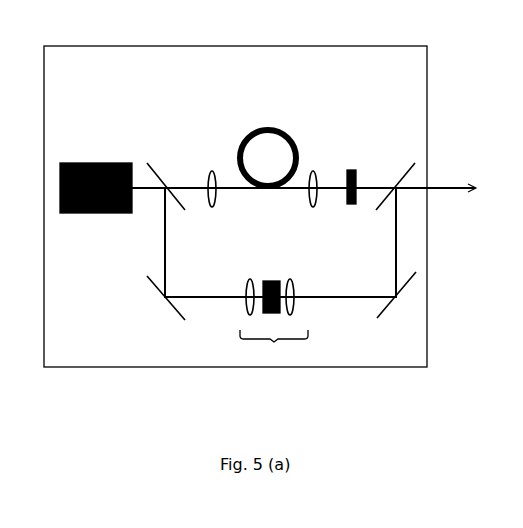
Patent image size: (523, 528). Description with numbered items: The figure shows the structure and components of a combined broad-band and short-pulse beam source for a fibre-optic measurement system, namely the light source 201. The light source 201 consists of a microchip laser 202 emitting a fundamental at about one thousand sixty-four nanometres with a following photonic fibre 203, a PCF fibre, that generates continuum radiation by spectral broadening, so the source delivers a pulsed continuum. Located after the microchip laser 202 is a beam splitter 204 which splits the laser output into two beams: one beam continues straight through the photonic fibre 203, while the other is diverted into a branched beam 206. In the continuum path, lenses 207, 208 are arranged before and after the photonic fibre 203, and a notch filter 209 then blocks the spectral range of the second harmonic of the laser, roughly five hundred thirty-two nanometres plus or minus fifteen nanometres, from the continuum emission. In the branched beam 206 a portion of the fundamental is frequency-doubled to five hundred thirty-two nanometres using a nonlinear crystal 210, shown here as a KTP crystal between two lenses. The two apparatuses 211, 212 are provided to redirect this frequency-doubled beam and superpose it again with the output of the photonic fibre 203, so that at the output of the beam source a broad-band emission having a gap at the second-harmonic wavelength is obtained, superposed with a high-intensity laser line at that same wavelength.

The light source 201 is at (163, 368).
The microchip laser 202 is at (83, 160).
The photonic fibre 203 is at (268, 174).
The beam splitter 204 is at (160, 176).
The beam 206 is at (208, 298).
The lens 207 is at (213, 168).
The lens 208 is at (312, 208).
The notch filter 209 is at (353, 208).
The nonlinear crystal 210 is at (270, 276).
The apparatus 211 is at (403, 300).
The apparatus 212 is at (399, 178).